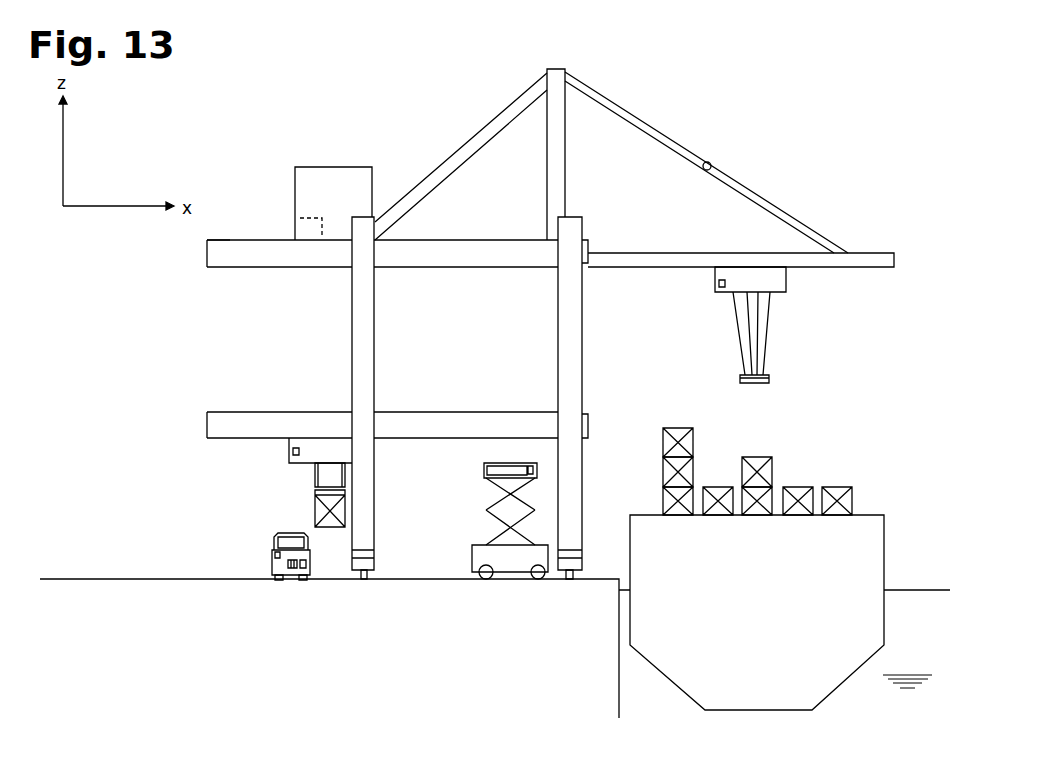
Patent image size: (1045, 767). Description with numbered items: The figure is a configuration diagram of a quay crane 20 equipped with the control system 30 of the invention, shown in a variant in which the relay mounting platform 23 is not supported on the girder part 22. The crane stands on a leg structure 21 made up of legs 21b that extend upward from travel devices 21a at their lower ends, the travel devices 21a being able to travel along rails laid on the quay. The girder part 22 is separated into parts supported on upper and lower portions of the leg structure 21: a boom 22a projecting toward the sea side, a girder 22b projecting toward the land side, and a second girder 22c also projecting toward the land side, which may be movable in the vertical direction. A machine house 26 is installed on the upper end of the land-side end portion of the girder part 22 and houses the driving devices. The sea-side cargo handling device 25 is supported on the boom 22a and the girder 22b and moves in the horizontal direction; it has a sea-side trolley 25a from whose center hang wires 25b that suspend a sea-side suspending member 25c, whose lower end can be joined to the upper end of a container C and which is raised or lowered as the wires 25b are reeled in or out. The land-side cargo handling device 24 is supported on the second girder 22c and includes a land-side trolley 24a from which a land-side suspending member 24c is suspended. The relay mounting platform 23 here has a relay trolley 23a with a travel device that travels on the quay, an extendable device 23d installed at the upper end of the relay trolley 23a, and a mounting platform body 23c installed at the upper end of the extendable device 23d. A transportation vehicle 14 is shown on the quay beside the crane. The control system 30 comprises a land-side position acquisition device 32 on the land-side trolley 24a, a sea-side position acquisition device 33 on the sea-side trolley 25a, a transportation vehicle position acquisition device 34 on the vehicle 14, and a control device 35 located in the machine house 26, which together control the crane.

The transport vehicle 14 is at (272, 556).
The quay crane 20 is at (447, 152).
The leg structure 21 is at (583, 317).
The travel devices 21a is at (375, 562).
The legs 21b is at (375, 391).
The girder part 22 is at (472, 239).
The boom 22a is at (865, 252).
The girder 22b is at (231, 239).
The second girder 22c is at (473, 411).
The relay mounting platform 23 is at (476, 513).
The relay trolley 23a is at (502, 573).
The mounting platform body 23c is at (484, 469).
The extendable device 23d is at (486, 507).
The land-side cargo handling device 24 is at (281, 444).
The land-side trolley 24a is at (289, 453).
The land-side suspending member 24c is at (314, 484).
The sea-side cargo handling device 25 is at (759, 299).
The sea-side trolley 25a is at (787, 284).
The wires 25b is at (769, 333).
The sea-side suspending member 25c is at (770, 383).
The machine house 26 is at (342, 166).
The control system 30 is at (281, 158).
The land-side position acquisition device 32 is at (295, 446).
The sea-side position acquisition device 33 is at (715, 283).
The transportation vehicle position acquisition device 34 is at (275, 552).
The control device 35 is at (310, 216).
The container C is at (853, 500).